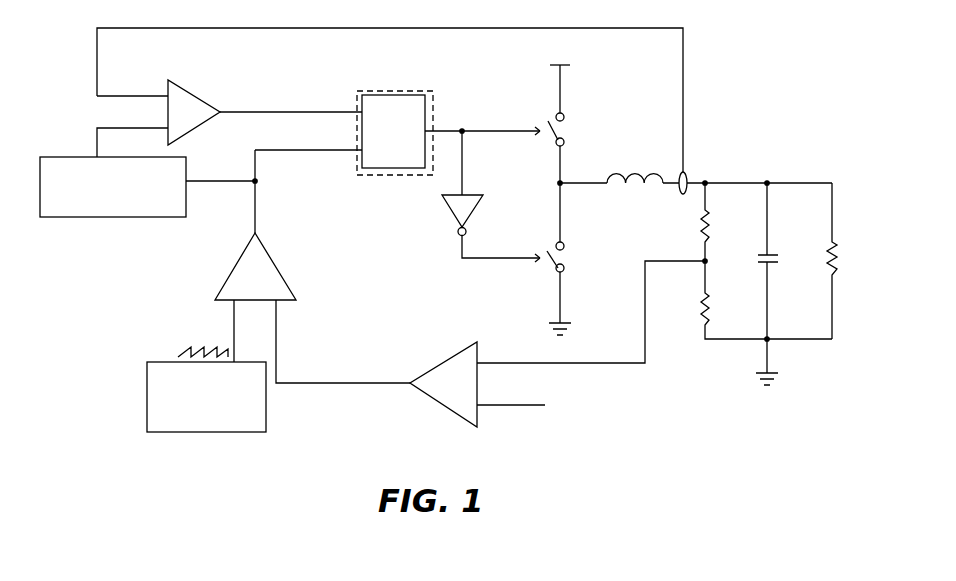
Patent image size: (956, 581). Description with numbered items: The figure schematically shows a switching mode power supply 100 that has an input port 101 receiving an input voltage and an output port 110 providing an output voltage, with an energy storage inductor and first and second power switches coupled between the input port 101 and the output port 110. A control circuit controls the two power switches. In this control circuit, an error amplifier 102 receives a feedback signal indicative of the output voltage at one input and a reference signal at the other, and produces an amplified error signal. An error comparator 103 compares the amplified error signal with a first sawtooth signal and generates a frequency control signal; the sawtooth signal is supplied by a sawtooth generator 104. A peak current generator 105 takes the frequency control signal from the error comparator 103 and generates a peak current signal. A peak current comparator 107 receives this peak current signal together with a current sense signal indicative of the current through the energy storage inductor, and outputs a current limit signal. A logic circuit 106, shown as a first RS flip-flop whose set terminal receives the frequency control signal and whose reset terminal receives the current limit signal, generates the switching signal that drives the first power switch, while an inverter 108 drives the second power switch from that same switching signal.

The switching mode power supply 100 is at (784, 52).
The input port 101 is at (572, 79).
The error amplifier 102 is at (430, 368).
The error comparator 103 is at (274, 263).
The sawtooth generator 104 is at (266, 414).
The peak current generator 105 is at (183, 218).
The logic circuit 106 is at (412, 91).
The peak current comparator 107 is at (193, 132).
The inverter 108 is at (455, 213).
The output port 110 is at (753, 174).